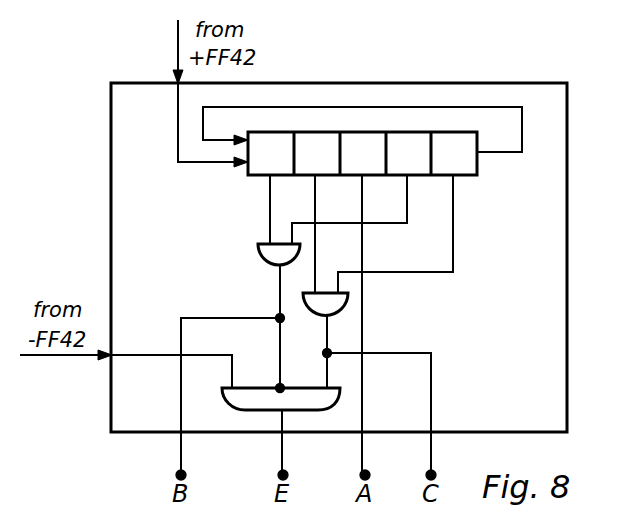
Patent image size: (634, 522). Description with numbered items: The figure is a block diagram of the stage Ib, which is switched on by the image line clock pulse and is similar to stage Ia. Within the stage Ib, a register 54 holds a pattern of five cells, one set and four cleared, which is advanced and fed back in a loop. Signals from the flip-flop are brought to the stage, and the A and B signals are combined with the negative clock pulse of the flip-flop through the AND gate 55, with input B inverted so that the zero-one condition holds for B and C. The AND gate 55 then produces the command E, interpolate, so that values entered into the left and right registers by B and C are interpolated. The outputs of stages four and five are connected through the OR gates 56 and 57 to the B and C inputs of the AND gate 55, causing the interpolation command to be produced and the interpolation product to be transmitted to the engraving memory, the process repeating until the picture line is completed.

The stage Ib is at (555, 258).
The shift register 54 is at (465, 165).
The AND gate 55 is at (238, 398).
The OR gate 56 is at (322, 304).
The OR gate 57 is at (262, 254).